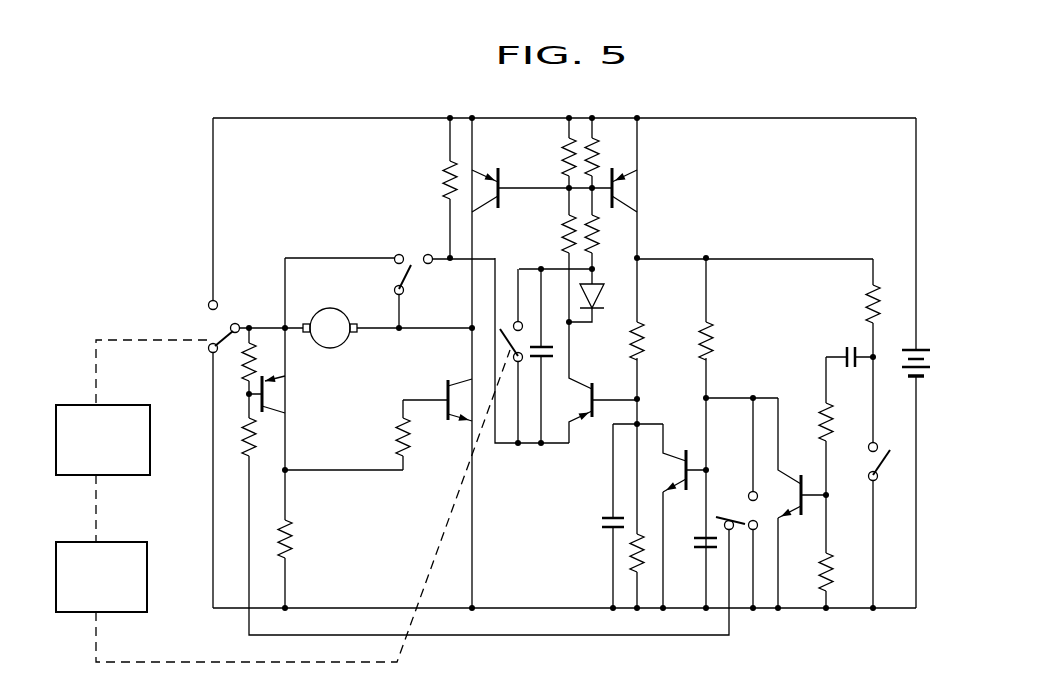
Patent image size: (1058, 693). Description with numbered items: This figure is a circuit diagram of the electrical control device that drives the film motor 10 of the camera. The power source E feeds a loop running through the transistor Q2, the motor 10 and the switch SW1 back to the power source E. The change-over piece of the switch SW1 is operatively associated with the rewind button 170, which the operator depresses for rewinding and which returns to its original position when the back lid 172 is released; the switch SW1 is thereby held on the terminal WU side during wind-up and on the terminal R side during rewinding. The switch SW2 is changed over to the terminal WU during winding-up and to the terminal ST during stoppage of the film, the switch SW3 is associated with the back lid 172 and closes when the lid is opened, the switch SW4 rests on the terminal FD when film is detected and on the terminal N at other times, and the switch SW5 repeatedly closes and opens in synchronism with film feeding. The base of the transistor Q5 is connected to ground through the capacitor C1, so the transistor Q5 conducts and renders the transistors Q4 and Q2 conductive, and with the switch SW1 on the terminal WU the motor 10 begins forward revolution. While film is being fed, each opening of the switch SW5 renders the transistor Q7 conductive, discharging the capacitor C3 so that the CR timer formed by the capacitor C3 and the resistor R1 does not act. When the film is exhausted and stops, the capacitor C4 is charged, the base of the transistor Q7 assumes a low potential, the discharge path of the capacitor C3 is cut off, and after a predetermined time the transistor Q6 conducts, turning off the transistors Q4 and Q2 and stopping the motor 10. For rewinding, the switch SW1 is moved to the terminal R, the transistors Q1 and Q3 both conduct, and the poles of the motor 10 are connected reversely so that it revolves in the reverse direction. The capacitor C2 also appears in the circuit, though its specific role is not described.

The motor 10 is at (338, 348).
The rewind button 170 is at (56, 407).
The back lid 172 is at (70, 614).
The transistor Q1 is at (268, 396).
The transistor Q2 is at (486, 178).
The transistor Q3 is at (455, 422).
The transistor Q4 is at (586, 425).
The transistor Q5 is at (622, 186).
The transistor Q6 is at (683, 452).
The transistor Q7 is at (800, 482).
The switch SW1 is at (236, 322).
The switch SW2 is at (400, 255).
The switch SW3 is at (516, 321).
The switch SW4 is at (727, 519).
The switch SW5 is at (899, 488).
The capacitor C1 is at (554, 352).
The capacitor C2 is at (601, 523).
The capacitor C3 is at (705, 550).
The capacitor C4 is at (852, 346).
The resistor R1 is at (712, 340).
The terminal R is at (208, 303).
The terminal ST is at (398, 284).
The terminal WU is at (212, 362).
The terminal N is at (752, 440).
The terminal FD is at (718, 521).
The power source E is at (912, 382).